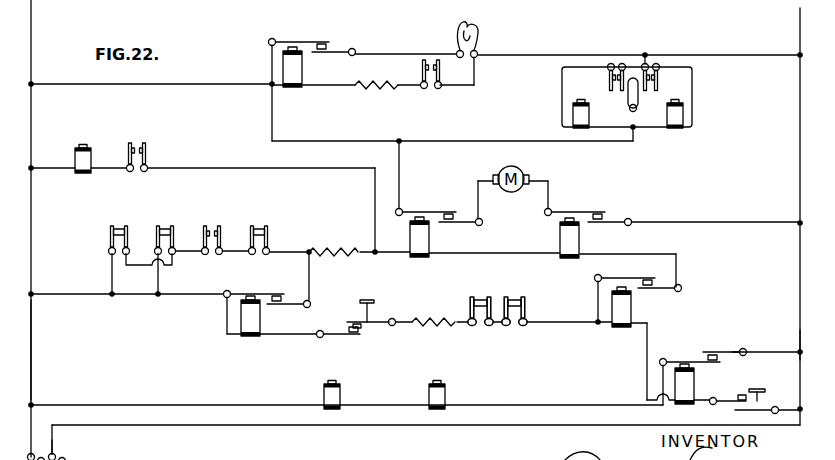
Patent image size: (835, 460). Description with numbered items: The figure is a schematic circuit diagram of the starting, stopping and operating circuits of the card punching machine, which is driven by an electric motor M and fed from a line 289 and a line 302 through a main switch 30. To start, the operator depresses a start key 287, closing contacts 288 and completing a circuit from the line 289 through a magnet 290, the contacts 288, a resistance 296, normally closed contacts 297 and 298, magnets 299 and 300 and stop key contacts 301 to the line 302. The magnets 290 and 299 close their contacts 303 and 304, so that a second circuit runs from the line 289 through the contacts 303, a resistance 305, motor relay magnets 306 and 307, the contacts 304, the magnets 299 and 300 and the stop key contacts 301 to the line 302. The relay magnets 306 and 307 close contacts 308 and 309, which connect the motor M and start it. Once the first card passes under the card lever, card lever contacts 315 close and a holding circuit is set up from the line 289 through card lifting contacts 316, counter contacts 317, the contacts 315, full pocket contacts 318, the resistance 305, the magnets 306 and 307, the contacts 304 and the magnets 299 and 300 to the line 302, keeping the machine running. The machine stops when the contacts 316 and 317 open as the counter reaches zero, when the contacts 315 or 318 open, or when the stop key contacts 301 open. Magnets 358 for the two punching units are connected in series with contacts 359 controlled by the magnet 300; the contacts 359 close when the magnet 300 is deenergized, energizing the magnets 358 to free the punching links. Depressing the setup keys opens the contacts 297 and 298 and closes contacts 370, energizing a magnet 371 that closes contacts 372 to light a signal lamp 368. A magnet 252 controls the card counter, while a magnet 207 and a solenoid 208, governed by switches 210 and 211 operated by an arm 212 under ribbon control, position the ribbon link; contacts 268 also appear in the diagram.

The main switch 30 is at (78, 459).
The magnet 207 is at (573, 113).
The solenoid 208 is at (679, 113).
The switch 210 is at (608, 78).
The switch 211 is at (657, 78).
The arm 212 is at (629, 86).
The magnet 252 is at (75, 160).
The contacts 268 is at (137, 144).
The start key 287 is at (362, 305).
The contacts 288 is at (368, 331).
The line 289 is at (31, 388).
The magnet 290 is at (239, 318).
The resistance 296 is at (434, 326).
The normally closed contacts 297 is at (470, 294).
The normally closed contacts 298 is at (528, 282).
The magnet 299 is at (614, 312).
The magnet 300 is at (689, 390).
The stop key contacts 301 is at (733, 404).
The line 302 is at (800, 343).
The contacts 303 is at (290, 293).
The contacts 304 is at (657, 284).
The resistance 305 is at (334, 250).
The motor relay magnet 306 is at (418, 239).
The motor relay magnet 307 is at (562, 243).
The contacts 308 is at (462, 210).
The contacts 309 is at (604, 217).
The card lever contacts 315 is at (214, 217).
The card lifting contacts 316 is at (113, 240).
The counter contacts 317 is at (169, 214).
The full pocket contacts 318 is at (262, 214).
The magnet 358 is at (341, 393).
The contacts 359 is at (686, 357).
The lamp 368 is at (481, 35).
The contacts 370 is at (432, 64).
The magnet 371 is at (297, 68).
The contacts 372 is at (327, 50).